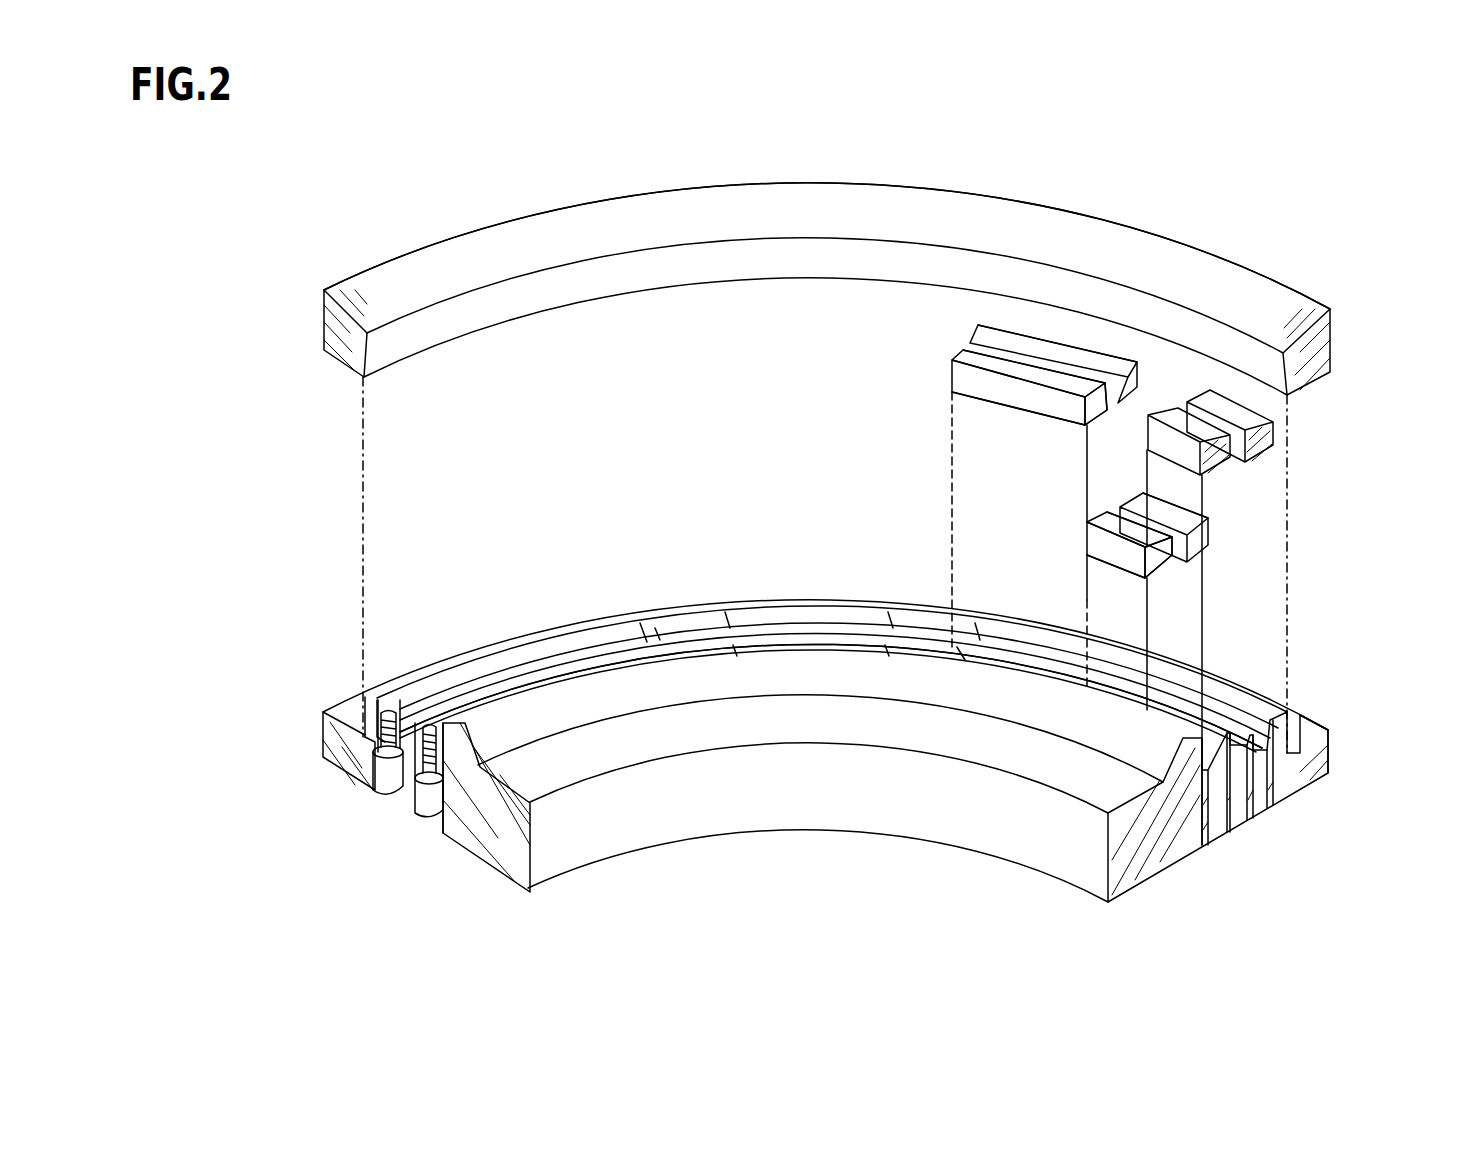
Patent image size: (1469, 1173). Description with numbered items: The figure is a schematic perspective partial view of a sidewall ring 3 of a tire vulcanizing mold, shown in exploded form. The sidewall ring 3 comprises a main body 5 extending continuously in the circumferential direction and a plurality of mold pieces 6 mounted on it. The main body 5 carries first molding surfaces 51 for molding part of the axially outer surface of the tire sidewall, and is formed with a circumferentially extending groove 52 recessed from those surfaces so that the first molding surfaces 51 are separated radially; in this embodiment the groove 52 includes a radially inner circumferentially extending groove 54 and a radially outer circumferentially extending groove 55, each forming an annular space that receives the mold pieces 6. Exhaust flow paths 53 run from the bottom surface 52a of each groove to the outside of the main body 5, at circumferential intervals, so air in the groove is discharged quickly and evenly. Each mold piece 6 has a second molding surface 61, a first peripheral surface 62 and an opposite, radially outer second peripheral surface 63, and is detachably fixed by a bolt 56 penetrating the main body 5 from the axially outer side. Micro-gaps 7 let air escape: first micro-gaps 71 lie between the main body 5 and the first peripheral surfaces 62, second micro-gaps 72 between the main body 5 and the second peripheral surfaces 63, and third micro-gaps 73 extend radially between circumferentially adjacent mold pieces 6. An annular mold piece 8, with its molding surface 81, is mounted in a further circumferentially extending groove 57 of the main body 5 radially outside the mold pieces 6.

The sidewall ring 3 is at (1380, 332).
The main body 5 is at (577, 840).
The first molding surfaces 51 is at (512, 703).
The circumferentially extending groove 52 is at (1223, 707).
The bottom surface 52a is at (1318, 730).
The exhaust flow paths 53 is at (1270, 792).
The radially inner circumferentially extending groove 54 is at (990, 660).
The radially outer circumferentially extending groove 55 is at (1178, 685).
The bolt 56 is at (365, 750).
The circumferentially extending groove 57 is at (350, 713).
The mold pieces 6 is at (988, 338).
The second molding surface 61 is at (965, 354).
The first peripheral surface 62 is at (993, 387).
The second peripheral surface 63 is at (1075, 348).
The micro-gaps 7 is at (490, 667).
The first micro-gaps 71 is at (863, 630).
The second micro-gaps 72 is at (758, 640).
The third micro-gaps 73 is at (640, 630).
The annular mold piece 8 is at (852, 197).
The molding surface 81 is at (517, 247).